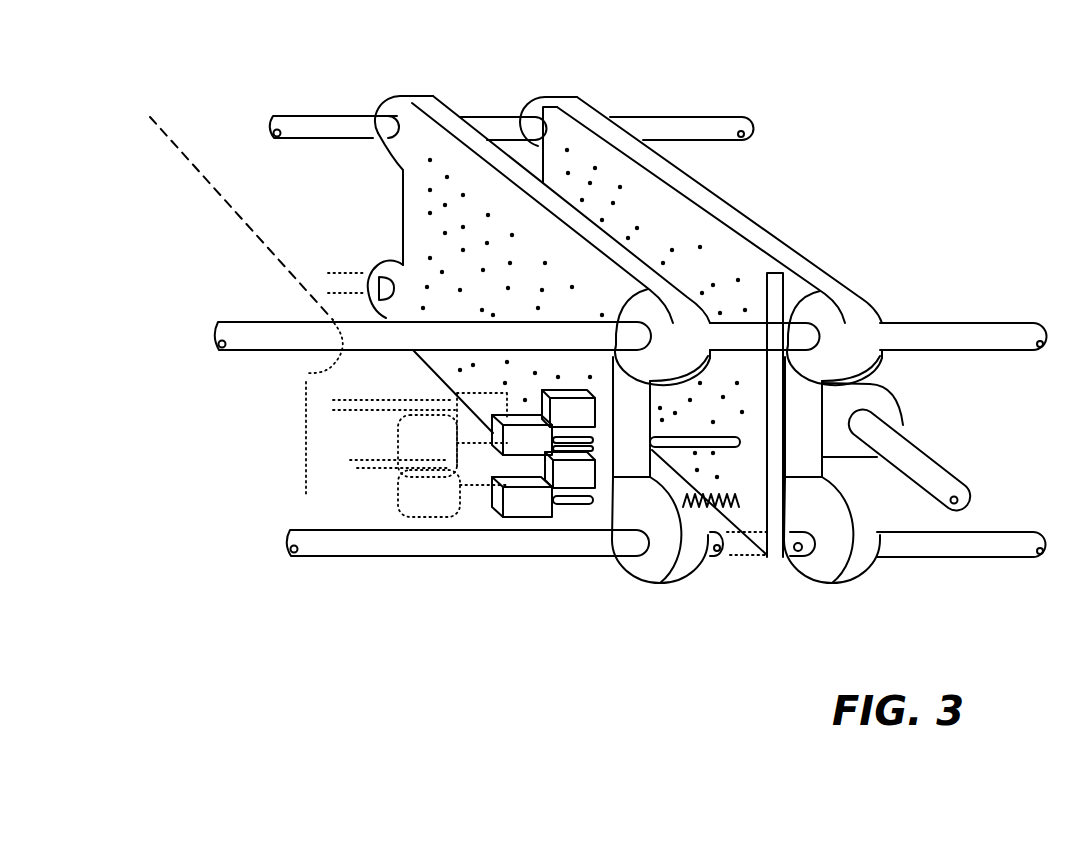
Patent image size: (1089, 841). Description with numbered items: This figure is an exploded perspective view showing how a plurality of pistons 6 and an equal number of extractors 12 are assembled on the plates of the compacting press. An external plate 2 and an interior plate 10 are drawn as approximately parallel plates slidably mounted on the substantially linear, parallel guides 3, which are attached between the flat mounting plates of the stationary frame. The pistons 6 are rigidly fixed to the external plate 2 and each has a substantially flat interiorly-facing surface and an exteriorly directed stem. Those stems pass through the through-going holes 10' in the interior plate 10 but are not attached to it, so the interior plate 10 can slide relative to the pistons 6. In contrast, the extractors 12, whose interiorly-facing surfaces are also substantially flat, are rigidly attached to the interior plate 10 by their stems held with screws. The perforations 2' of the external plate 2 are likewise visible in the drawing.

The interior plate 10 is at (567, 296).
The external plate 2 is at (745, 304).
The through-going holes 10' is at (473, 280).
The perforations of second plate 2' is at (665, 313).
The guides 3 is at (1017, 338).
The pistons 6 is at (525, 502).
The extractors 12 is at (583, 475).